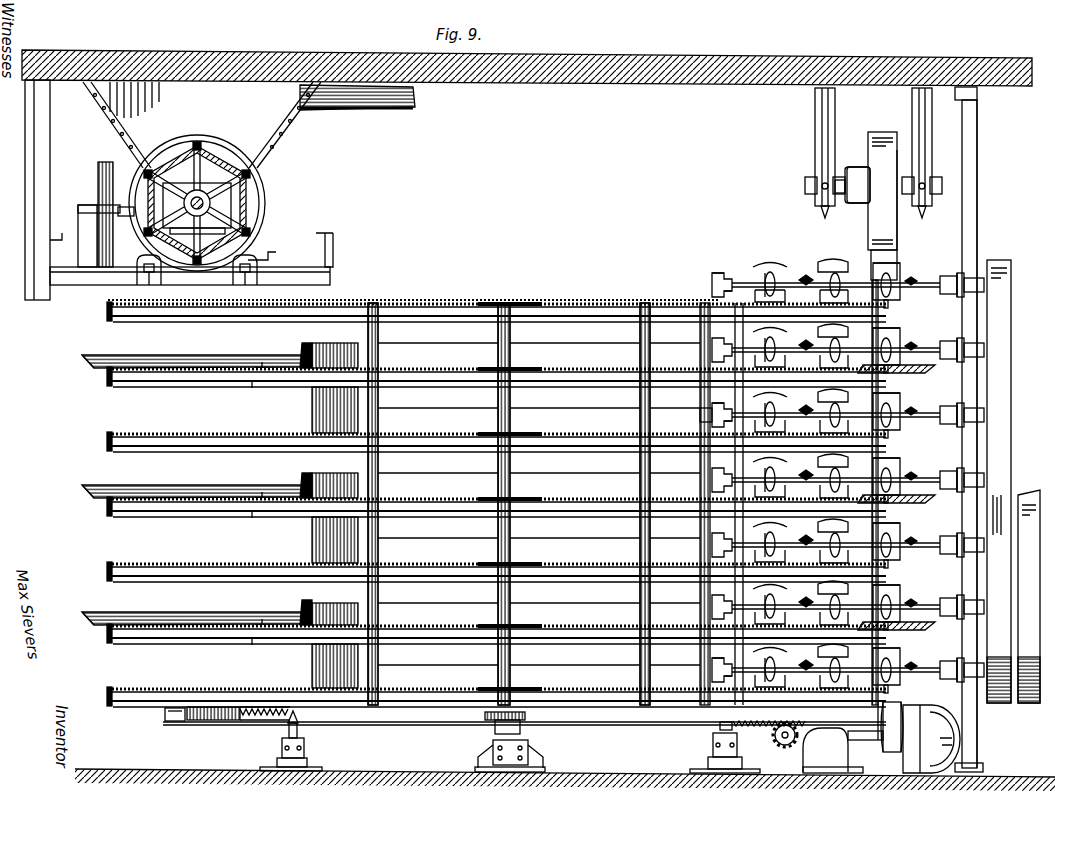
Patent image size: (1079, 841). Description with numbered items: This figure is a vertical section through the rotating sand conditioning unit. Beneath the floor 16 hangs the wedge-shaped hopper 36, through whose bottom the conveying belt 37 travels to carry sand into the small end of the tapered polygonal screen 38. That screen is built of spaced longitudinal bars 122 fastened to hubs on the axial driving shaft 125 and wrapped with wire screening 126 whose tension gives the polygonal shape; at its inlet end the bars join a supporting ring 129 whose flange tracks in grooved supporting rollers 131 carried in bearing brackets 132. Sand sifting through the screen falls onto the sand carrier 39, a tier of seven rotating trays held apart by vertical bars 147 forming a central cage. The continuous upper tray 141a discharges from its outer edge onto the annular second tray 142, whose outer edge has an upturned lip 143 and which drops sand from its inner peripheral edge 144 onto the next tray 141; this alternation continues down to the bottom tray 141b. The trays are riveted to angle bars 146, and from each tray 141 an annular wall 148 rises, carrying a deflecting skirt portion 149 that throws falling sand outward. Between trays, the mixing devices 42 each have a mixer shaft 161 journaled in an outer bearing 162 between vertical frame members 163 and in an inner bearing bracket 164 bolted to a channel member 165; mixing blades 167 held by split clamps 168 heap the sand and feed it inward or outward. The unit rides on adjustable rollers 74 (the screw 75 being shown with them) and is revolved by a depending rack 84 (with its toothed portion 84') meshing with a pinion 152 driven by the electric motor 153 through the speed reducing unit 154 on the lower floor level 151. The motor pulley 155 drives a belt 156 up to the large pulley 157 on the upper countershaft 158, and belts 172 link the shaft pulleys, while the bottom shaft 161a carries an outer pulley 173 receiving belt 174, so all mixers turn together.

The floor 16 is at (1030, 58).
The hopper 36 is at (272, 128).
The conveying belt 37 is at (233, 206).
The tapered polygonal screen 38 is at (258, 215).
The sand carrier 39 is at (440, 302).
The mixing devices 42 is at (806, 279).
The adjustable rollers 74 is at (282, 741).
The jack screw 75 is at (298, 722).
The depending rack 84 is at (174, 730).
The rack 84' is at (238, 736).
The longitudinally extending bars 122 is at (263, 169).
The axial driving shaft 125 is at (205, 194).
The wire screening 126 is at (258, 204).
The supporting ring 129 is at (243, 259).
The supporting rollers 131 is at (212, 287).
The bearing brackets 132 is at (148, 287).
The tray 141 is at (108, 434).
The upper tray 141a is at (108, 306).
The bottom tray 141b is at (130, 690).
The second tray 142 is at (95, 370).
The upwardly turned lip 143 is at (85, 358).
The inner peripheral edge 144 is at (262, 366).
The angle bars 146 is at (252, 385).
The vertically extending bars 147 is at (378, 411).
The annular wall 148 is at (312, 417).
The deflecting skirt portion 149 is at (306, 360).
The lower floor level 151 is at (478, 755).
The pinion 152 is at (783, 748).
The electric motor 153 is at (962, 739).
The speed reducing unit 154 is at (838, 745).
The pulley 155 is at (888, 752).
The belt 156 is at (869, 249).
The large pulley 157 is at (898, 170).
The upper countershaft 158 is at (897, 216).
The mixer shaft 161 is at (910, 282).
The bottom shaft 161a is at (925, 666).
The bearing 162 is at (957, 280).
The vertically extending frame members 163 is at (978, 249).
The bearing bracket 164 is at (720, 291).
The channel member 165 is at (712, 276).
The mixing blades 167 is at (792, 286).
The split clamp 168 is at (780, 278).
The belts 172 is at (1020, 481).
The outer pulley 173 is at (1030, 680).
The belt 174 is at (1040, 528).